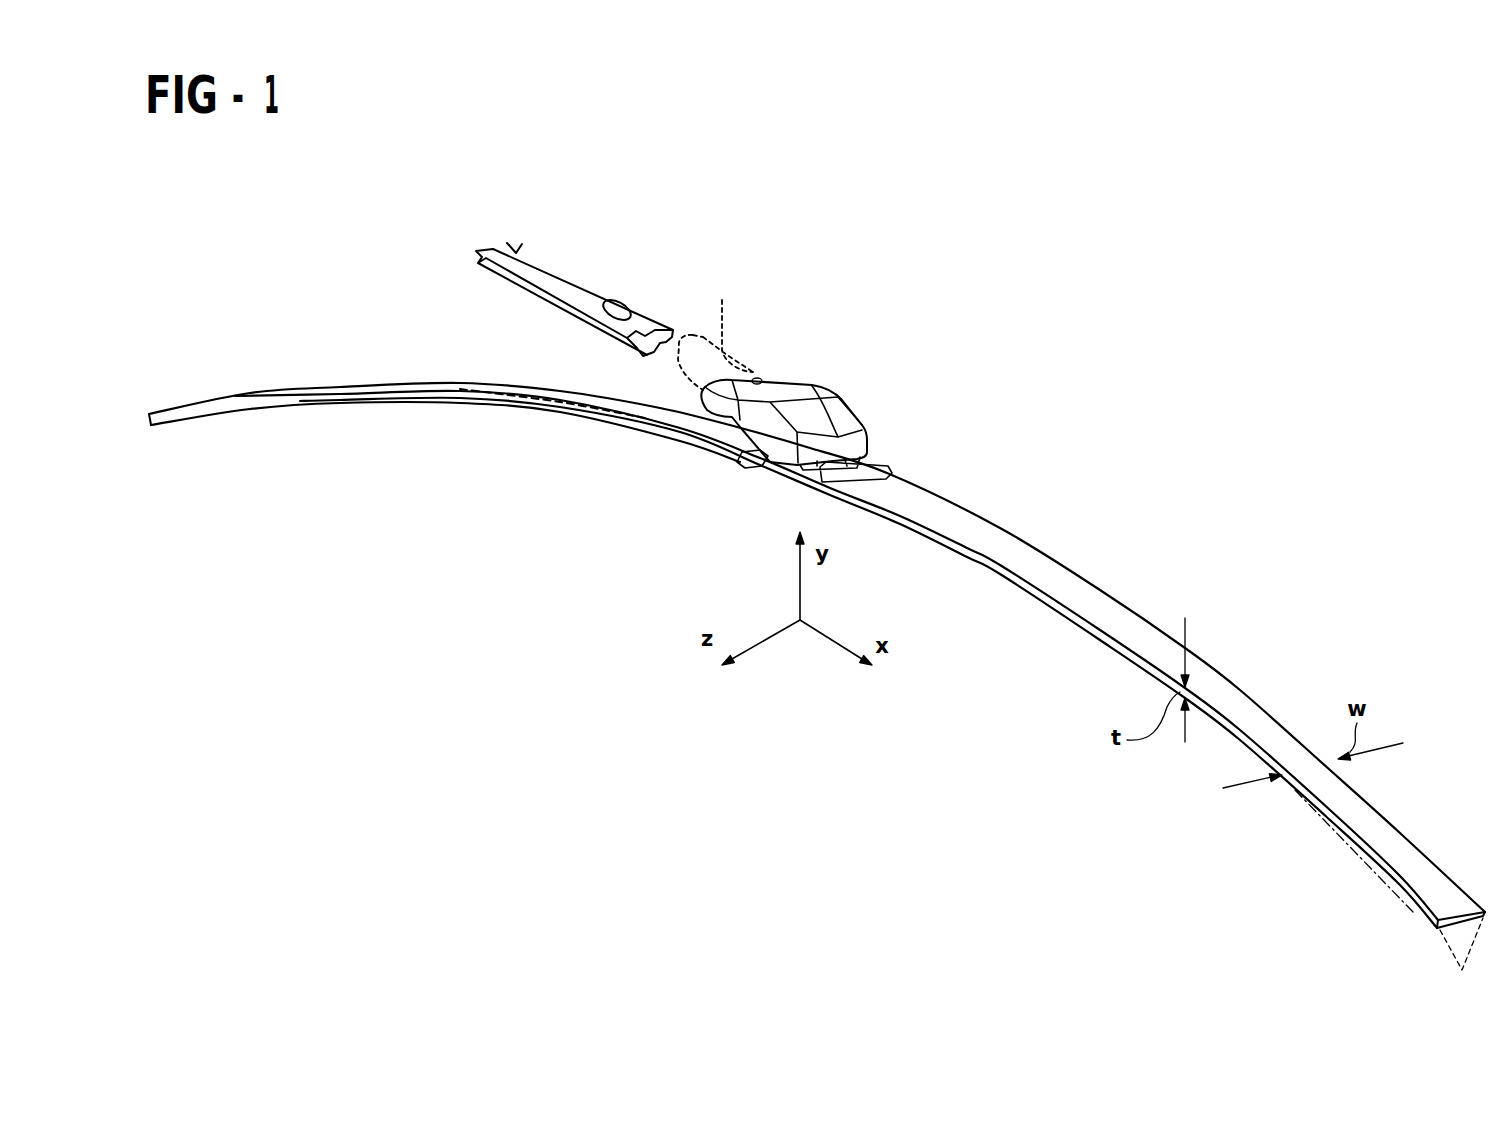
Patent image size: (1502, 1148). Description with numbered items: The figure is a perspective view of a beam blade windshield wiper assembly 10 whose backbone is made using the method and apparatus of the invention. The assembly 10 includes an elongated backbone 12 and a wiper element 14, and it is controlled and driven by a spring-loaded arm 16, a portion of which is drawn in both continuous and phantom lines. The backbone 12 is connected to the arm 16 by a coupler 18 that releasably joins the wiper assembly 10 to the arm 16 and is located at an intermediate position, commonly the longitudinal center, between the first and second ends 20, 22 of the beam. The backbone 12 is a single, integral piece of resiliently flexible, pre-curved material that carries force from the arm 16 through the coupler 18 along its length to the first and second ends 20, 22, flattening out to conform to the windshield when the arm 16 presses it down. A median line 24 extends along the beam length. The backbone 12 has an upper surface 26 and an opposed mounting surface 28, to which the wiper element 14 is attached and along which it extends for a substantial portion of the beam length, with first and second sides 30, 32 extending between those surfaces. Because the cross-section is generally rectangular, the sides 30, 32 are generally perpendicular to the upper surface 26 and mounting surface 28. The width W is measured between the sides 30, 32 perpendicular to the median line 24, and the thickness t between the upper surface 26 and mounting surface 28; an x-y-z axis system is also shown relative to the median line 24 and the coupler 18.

The beam blade windshield wiper assembly 10 is at (970, 413).
The backbone 12 is at (1063, 585).
The wiper element 14 is at (1406, 913).
The spring-loaded arm 16 is at (550, 265).
The coupler 18 is at (853, 368).
The first end 20 is at (167, 414).
The second end 22 is at (1457, 900).
The median line 24 is at (560, 400).
The upper surface 26 is at (380, 387).
The mounting surface 28 is at (377, 400).
The first side 30 is at (310, 397).
The second side 32 is at (327, 387).